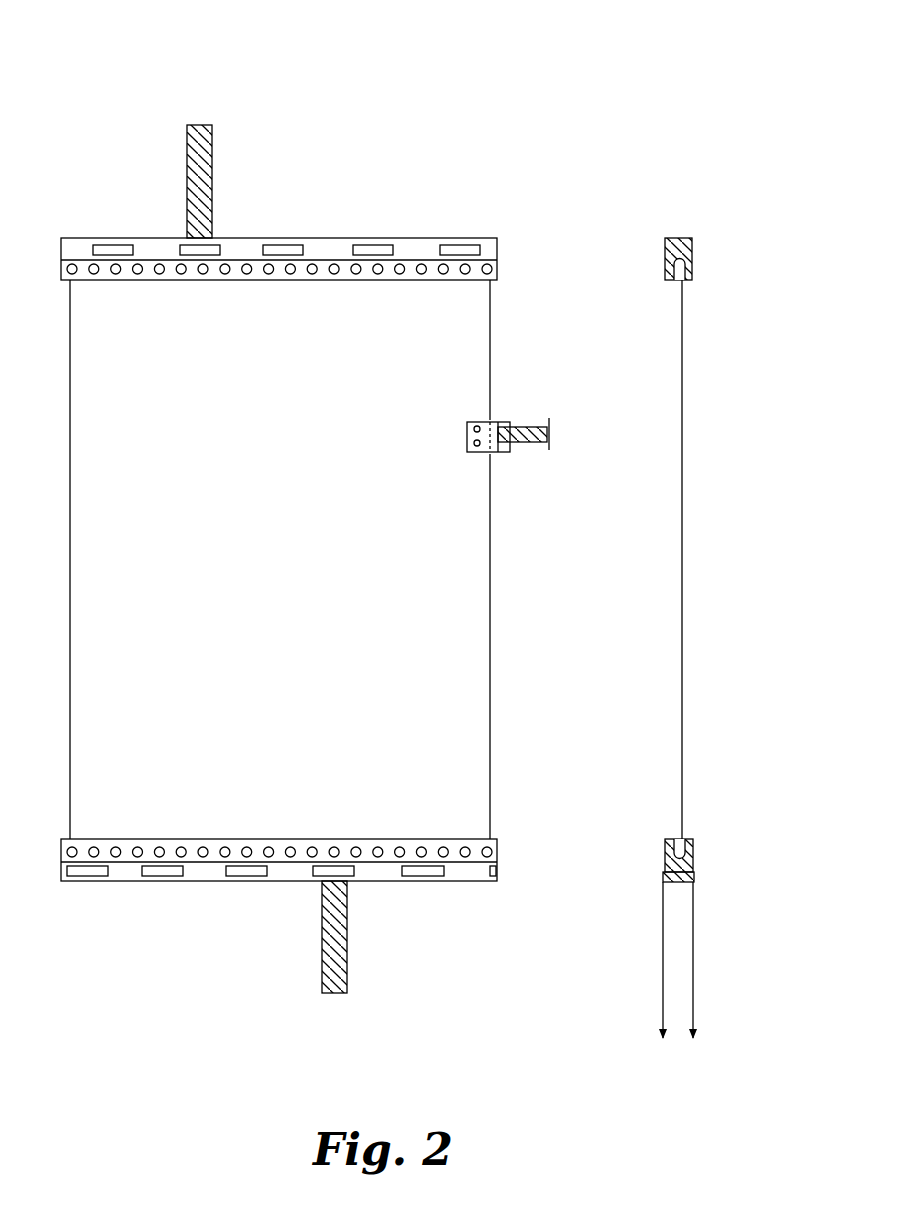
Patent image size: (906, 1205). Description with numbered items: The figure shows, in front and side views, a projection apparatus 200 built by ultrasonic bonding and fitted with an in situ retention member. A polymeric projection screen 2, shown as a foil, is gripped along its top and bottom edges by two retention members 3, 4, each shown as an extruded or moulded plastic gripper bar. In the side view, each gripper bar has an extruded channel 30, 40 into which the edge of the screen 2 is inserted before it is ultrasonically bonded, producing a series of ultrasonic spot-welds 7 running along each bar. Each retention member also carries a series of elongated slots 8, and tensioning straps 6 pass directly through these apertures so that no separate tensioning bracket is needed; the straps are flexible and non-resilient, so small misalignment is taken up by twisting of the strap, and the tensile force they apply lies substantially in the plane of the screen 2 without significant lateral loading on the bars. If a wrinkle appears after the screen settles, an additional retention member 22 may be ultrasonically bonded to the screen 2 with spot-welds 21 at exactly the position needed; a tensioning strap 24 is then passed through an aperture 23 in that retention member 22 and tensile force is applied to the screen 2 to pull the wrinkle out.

The projection apparatus 200 is at (108, 112).
The polymeric projection screen 2 is at (70, 550).
The retention member 3 is at (414, 523).
The retention member 4 is at (468, 873).
The tensioning strap 6 is at (213, 157).
The ultrasonic spot-weld 7 is at (443, 850).
The elongated slot 8 is at (373, 247).
The spot-weld 21 is at (475, 427).
The additional retention member 22 is at (489, 448).
The aperture 23 is at (508, 424).
The tensioning strap 24 is at (545, 442).
The extruded channel 30 is at (681, 268).
The extruded channel 40 is at (681, 848).